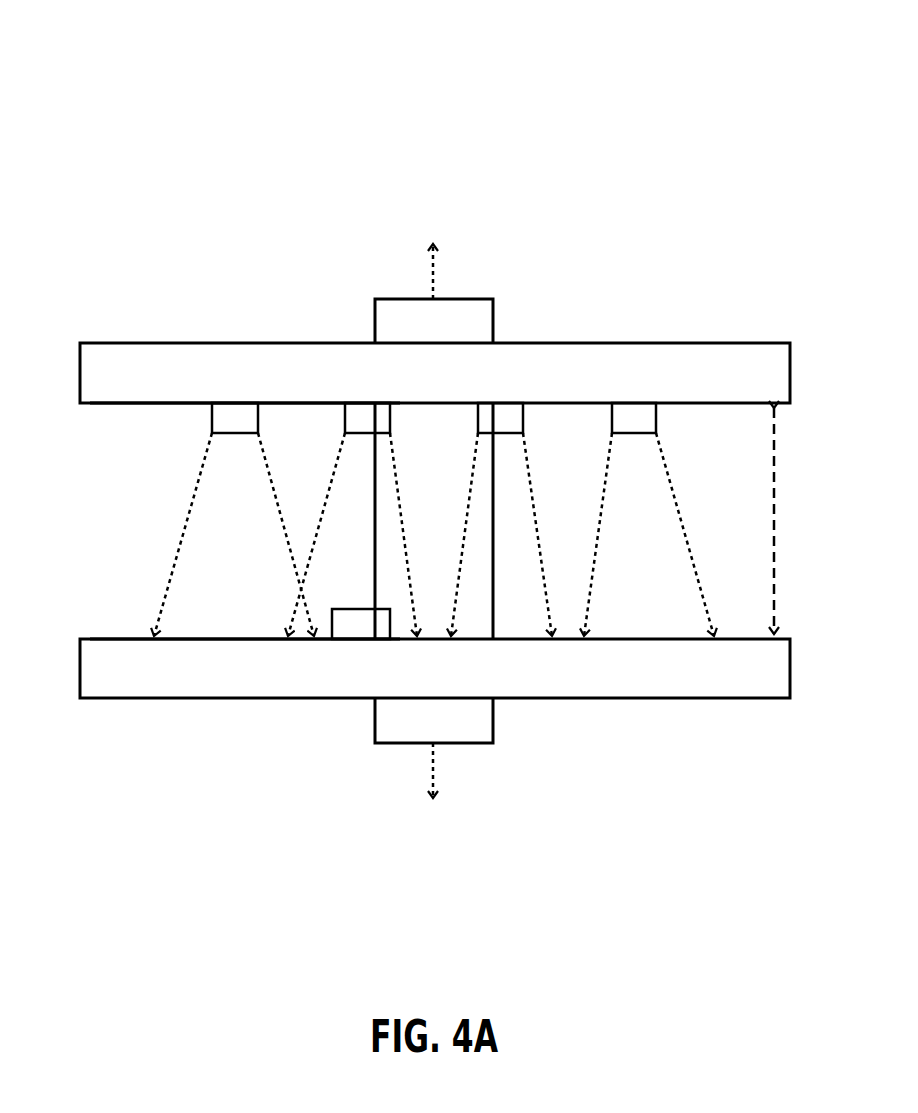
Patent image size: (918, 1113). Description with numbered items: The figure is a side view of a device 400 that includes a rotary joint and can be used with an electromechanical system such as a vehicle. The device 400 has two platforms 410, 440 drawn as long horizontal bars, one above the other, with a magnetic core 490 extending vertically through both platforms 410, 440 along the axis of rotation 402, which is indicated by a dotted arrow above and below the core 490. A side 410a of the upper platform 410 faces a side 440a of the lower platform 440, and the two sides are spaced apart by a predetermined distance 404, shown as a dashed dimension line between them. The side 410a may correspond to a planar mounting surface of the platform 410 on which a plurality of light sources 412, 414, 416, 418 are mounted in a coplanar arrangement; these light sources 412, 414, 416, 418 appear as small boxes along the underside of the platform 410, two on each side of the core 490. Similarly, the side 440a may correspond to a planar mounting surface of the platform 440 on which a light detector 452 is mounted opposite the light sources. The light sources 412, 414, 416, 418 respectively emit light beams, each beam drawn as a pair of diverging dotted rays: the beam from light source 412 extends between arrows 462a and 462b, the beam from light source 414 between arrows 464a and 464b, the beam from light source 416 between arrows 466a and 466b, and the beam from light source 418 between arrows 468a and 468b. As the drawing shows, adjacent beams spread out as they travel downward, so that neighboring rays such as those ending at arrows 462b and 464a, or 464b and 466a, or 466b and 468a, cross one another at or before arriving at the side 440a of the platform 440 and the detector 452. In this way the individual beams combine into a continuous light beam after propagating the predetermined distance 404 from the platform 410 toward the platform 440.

The device 400 is at (98, 70).
The axis of rotation 402 is at (437, 244).
The predetermined distance 404 is at (774, 518).
The platform 410 is at (132, 386).
The side of platform 410 410a is at (110, 405).
The light source 412 is at (251, 431).
The light source 414 is at (383, 431).
The light source 416 is at (516, 431).
The light source 418 is at (650, 431).
The platform 440 is at (133, 681).
The side of platform 440 440a is at (108, 637).
The light detector 452 is at (376, 636).
The arrow 462a is at (193, 498).
The arrow 462b is at (278, 502).
The arrow 464a is at (324, 500).
The arrow 464b is at (428, 572).
The arrow 466a is at (457, 500).
The arrow 466b is at (562, 568).
The arrow 468a is at (591, 500).
The arrow 468b is at (675, 505).
The magnetic core 490 is at (450, 332).